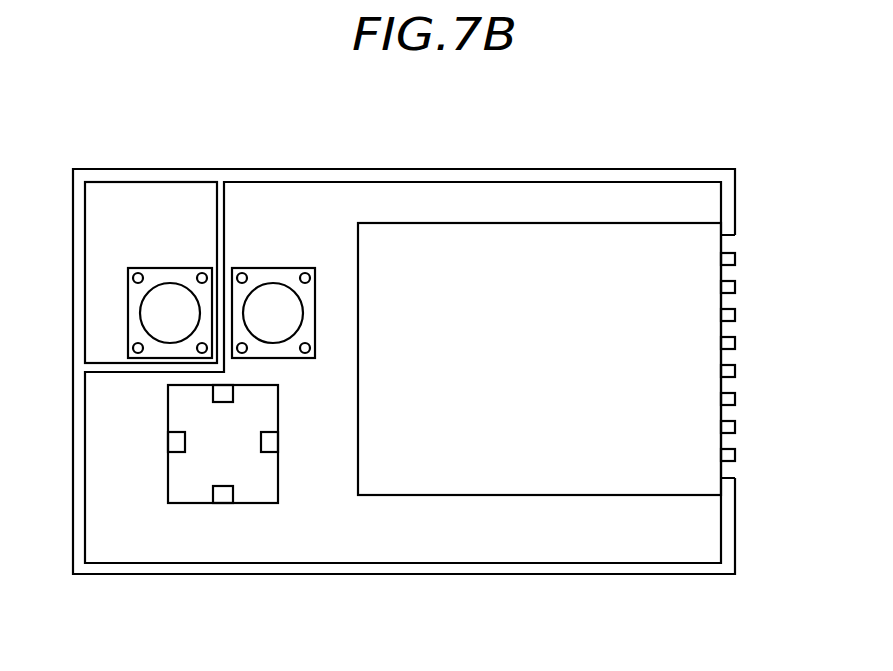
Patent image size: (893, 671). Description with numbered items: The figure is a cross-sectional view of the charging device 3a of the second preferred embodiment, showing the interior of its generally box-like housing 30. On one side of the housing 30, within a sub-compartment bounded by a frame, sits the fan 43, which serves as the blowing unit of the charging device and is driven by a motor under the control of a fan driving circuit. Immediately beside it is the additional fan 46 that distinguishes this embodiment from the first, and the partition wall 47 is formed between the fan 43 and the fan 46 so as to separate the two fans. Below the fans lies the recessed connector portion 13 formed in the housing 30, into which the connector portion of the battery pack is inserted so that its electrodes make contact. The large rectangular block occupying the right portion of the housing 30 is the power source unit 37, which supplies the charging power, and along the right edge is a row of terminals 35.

The housing 30 is at (613, 575).
The charging device 3a is at (766, 162).
The partition wall 47 is at (217, 225).
The connector terminals 35 is at (748, 292).
The power source unit 37 is at (468, 473).
The fan 43 is at (128, 325).
The fan 46 is at (275, 267).
The recessed connector portion 13 is at (168, 475).